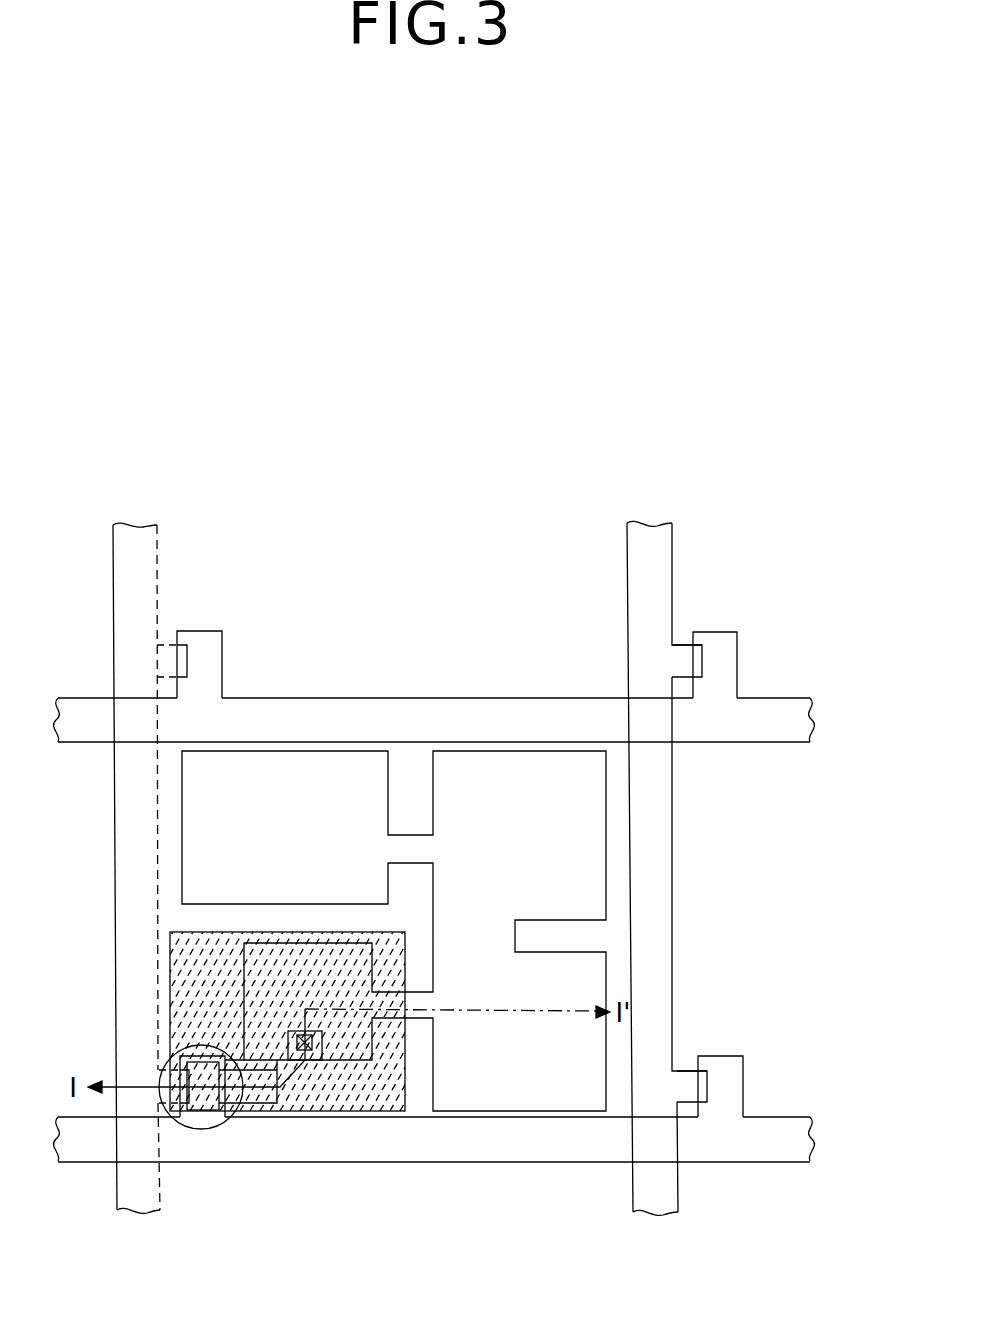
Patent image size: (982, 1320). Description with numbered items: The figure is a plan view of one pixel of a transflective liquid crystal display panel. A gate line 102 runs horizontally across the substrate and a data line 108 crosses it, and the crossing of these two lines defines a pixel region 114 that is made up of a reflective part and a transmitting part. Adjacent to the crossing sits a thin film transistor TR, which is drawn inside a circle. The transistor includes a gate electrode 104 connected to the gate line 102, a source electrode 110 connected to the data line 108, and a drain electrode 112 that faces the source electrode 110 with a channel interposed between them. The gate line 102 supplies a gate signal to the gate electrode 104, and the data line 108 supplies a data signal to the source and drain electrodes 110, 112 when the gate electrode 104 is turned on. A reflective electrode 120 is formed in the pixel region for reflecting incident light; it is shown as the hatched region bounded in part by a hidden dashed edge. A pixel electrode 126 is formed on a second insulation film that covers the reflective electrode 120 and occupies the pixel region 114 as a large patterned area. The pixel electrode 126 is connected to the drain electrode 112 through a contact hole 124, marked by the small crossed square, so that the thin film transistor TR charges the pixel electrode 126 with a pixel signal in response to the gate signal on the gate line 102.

The gate line 102 is at (811, 1140).
The gate electrode 104 is at (208, 1120).
The data line 108 is at (132, 533).
The source electrode 110 is at (176, 1120).
The drain electrode 112 is at (260, 1105).
The pixel region 114 is at (612, 863).
The reflective electrode 120 is at (157, 975).
The contact hole 124 is at (320, 1058).
The pixel electrode 126 is at (607, 968).
The thin film transistor TR is at (197, 1044).